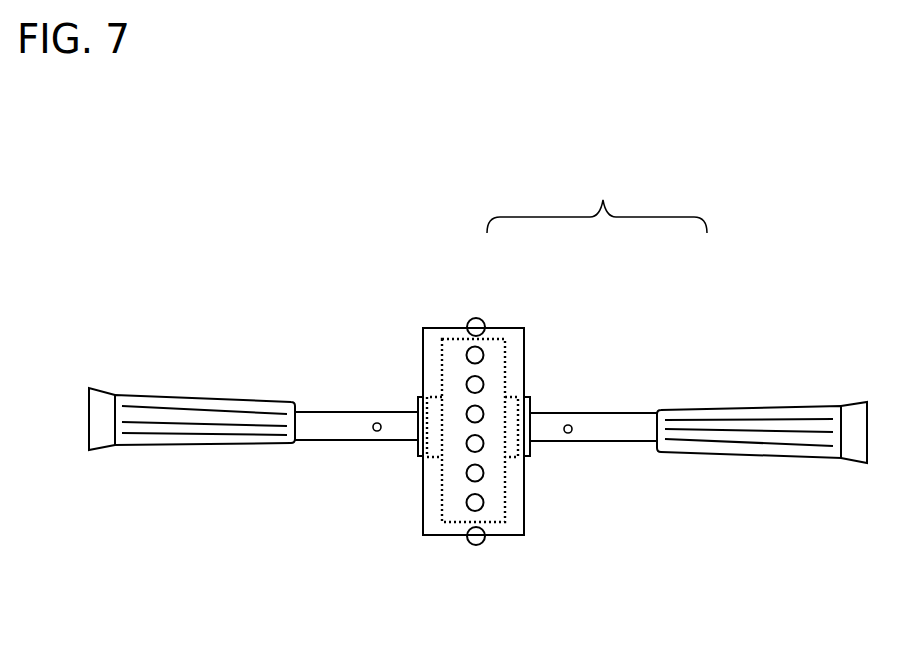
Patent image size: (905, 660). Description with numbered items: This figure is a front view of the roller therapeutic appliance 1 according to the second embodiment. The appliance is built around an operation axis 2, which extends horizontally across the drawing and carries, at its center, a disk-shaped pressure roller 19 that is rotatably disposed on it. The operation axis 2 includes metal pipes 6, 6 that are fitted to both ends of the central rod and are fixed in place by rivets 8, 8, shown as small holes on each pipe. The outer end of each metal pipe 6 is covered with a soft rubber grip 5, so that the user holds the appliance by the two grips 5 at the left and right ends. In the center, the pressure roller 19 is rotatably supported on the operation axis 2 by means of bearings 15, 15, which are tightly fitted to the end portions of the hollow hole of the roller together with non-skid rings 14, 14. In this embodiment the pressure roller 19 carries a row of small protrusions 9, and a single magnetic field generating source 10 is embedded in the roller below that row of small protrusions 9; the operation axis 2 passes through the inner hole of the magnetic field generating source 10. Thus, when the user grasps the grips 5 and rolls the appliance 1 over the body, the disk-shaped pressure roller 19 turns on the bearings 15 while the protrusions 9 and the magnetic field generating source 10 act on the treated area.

The roller therapeutic appliance 1 is at (597, 199).
The operation axis 2 is at (639, 380).
The soft rubber grip 5 is at (765, 415).
The metal pipe 6 is at (602, 447).
The rivet 8 is at (570, 425).
The small protrusion 9 is at (472, 541).
The magnetic field generating source 10 is at (500, 528).
The non-skid ring 14 is at (438, 395).
The bearing 15 is at (528, 456).
The disk-shaped pressure roller 19 is at (506, 306).